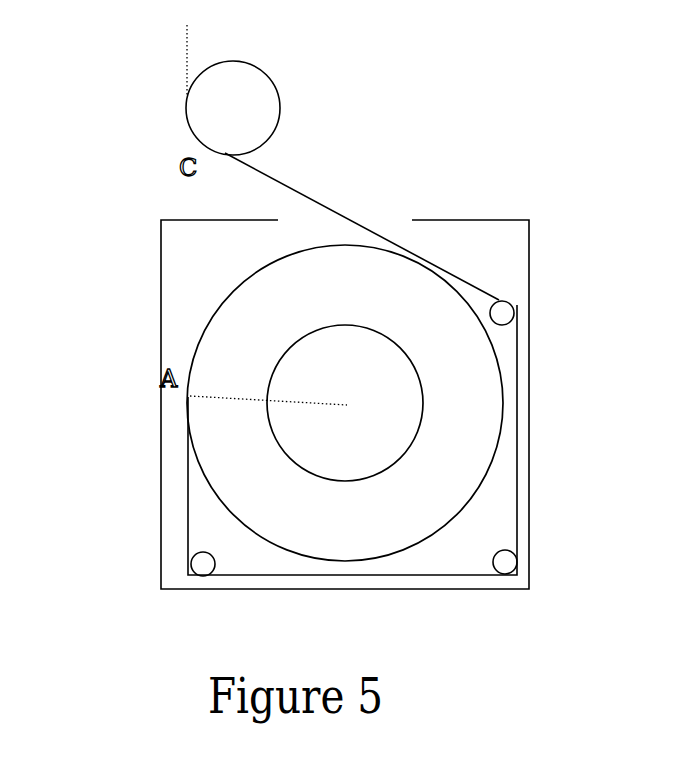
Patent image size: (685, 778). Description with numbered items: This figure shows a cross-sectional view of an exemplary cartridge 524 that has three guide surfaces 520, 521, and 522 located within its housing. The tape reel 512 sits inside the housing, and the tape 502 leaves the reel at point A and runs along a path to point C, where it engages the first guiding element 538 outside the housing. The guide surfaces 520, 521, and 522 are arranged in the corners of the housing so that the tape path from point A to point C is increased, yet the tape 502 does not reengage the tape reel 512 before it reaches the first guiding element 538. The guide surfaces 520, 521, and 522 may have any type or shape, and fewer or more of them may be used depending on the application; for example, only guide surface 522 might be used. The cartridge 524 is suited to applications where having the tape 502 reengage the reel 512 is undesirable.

The tape 502 is at (187, 513).
The tape reel 512 is at (413, 443).
The guide surface 520 is at (190, 567).
The guide surface 521 is at (507, 562).
The guide surface 522 is at (505, 313).
The cartridge 524 is at (530, 363).
The first guiding element 538 is at (252, 115).